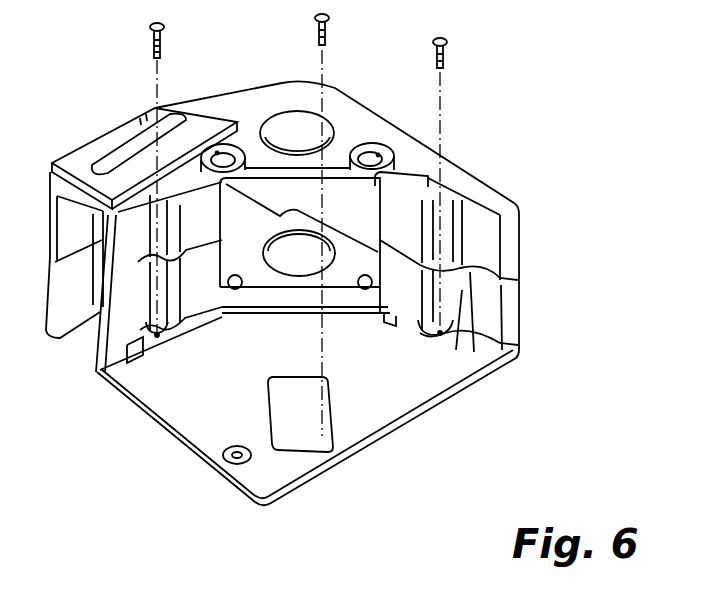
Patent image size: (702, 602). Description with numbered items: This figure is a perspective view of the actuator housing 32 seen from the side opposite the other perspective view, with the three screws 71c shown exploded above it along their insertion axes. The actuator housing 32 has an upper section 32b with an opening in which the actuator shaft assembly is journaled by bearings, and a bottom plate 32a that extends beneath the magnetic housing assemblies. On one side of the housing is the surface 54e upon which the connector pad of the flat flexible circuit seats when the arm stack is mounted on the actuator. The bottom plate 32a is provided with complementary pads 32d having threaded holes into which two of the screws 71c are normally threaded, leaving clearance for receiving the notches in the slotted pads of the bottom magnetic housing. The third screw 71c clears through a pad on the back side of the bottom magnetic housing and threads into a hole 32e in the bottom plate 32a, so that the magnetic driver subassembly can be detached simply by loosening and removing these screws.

The actuator housing 32 is at (265, 283).
The bottom plate 32a is at (187, 452).
The upper section 32b is at (257, 107).
The pads 32d is at (157, 336).
The hole 32e is at (323, 437).
The surface 54e is at (90, 143).
The screws 71c is at (152, 48).